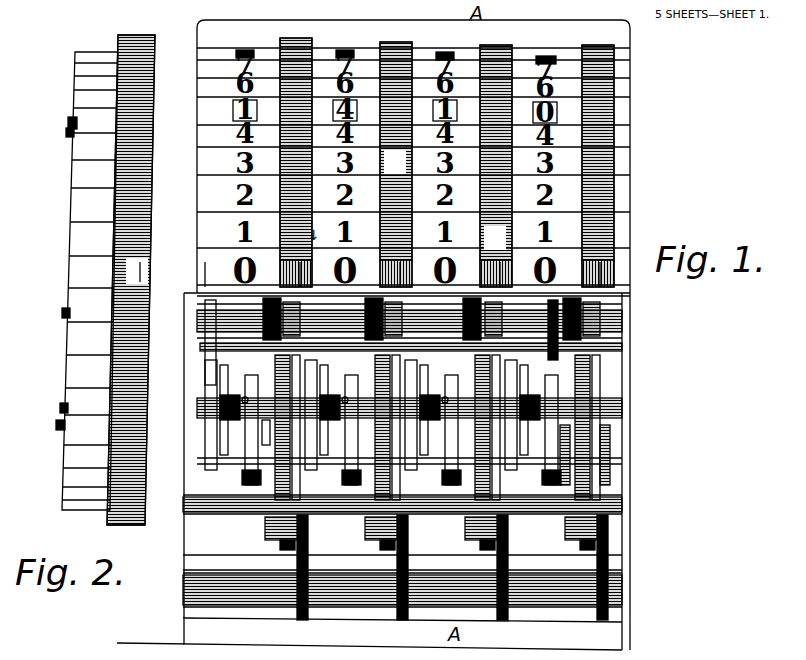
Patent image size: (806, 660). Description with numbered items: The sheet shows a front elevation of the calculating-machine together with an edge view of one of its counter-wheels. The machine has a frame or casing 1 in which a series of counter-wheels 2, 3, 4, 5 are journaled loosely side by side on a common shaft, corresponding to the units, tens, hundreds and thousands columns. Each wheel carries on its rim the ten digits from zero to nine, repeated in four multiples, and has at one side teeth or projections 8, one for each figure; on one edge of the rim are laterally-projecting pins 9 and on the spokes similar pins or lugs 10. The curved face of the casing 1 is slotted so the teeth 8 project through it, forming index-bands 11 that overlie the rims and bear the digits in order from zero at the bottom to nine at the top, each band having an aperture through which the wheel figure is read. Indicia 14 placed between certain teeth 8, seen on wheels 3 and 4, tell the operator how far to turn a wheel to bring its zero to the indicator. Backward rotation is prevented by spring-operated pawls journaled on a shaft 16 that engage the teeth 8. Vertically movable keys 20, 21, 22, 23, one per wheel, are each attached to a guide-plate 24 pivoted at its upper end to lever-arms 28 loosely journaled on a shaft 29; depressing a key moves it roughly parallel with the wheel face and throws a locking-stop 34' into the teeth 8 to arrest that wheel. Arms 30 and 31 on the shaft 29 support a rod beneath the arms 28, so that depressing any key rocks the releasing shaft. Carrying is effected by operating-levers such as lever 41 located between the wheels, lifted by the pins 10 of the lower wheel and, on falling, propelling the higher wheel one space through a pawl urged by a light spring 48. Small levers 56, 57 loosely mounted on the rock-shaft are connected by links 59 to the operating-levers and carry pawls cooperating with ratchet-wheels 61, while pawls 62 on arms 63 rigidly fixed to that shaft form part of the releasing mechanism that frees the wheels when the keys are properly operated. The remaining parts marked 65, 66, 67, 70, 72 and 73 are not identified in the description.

In FIG. 1, the frame or casing 1 is at (625, 487).
In FIG. 2, the counter-wheel 2 is at (72, 232).
In FIG. 1, the counter-wheel 2 is at (603, 55).
In FIG. 1, the counter-wheel 3 is at (500, 50).
In FIG. 1, the counter-wheel 4 is at (393, 45).
In FIG. 1, the counter-wheel 5 is at (290, 42).
In FIG. 2, the teeth or projections 8 is at (140, 513).
In FIG. 1, the teeth or projections 8 is at (586, 530).
In FIG. 2, the laterally-projecting pins 9 is at (68, 122).
In FIG. 2, the pins or lugs 10 is at (68, 136).
In FIG. 1, the index-bands 11 is at (384, 342).
In FIG. 2, the indicia 14 is at (146, 270).
In FIG. 1, the indicia 14 is at (385, 164).
In FIG. 2, the shaft 16 is at (64, 318).
In FIG. 1, the key 20 is at (620, 278).
In FIG. 1, the key 21 is at (517, 274).
In FIG. 1, the key 22 is at (417, 274).
In FIG. 1, the key 23 is at (315, 274).
In FIG. 1, the guide-plate 24 is at (559, 455).
In FIG. 1, the lever-arms 28 is at (622, 316).
In FIG. 1, the shaft 29 is at (600, 352).
In FIG. 1, the arm 30 is at (548, 318).
In FIG. 1, the arm 31 is at (206, 338).
In FIG. 1, the arm 34' is at (643, 455).
In FIG. 1, the operating-lever 41 is at (470, 530).
In FIG. 1, the light spring 48 is at (292, 536).
In FIG. 1, the small lever 56 is at (522, 400).
In FIG. 1, the small lever 57 is at (520, 500).
In FIG. 1, the links 59 is at (409, 471).
In FIG. 1, the ratchet-wheels 61 is at (280, 378).
In FIG. 1, the pawls 62 is at (262, 427).
In FIG. 1, the arms 63 is at (215, 356).
In FIG. 1, the shaft 65 is at (409, 427).
In FIG. 1, the rack 66 is at (404, 386).
In FIG. 1, the rack 67 is at (300, 386).
In FIG. 1, the post 70 is at (519, 567).
In FIG. 1, the post 72 is at (308, 553).
In FIG. 1, the base shaft 73 is at (402, 581).